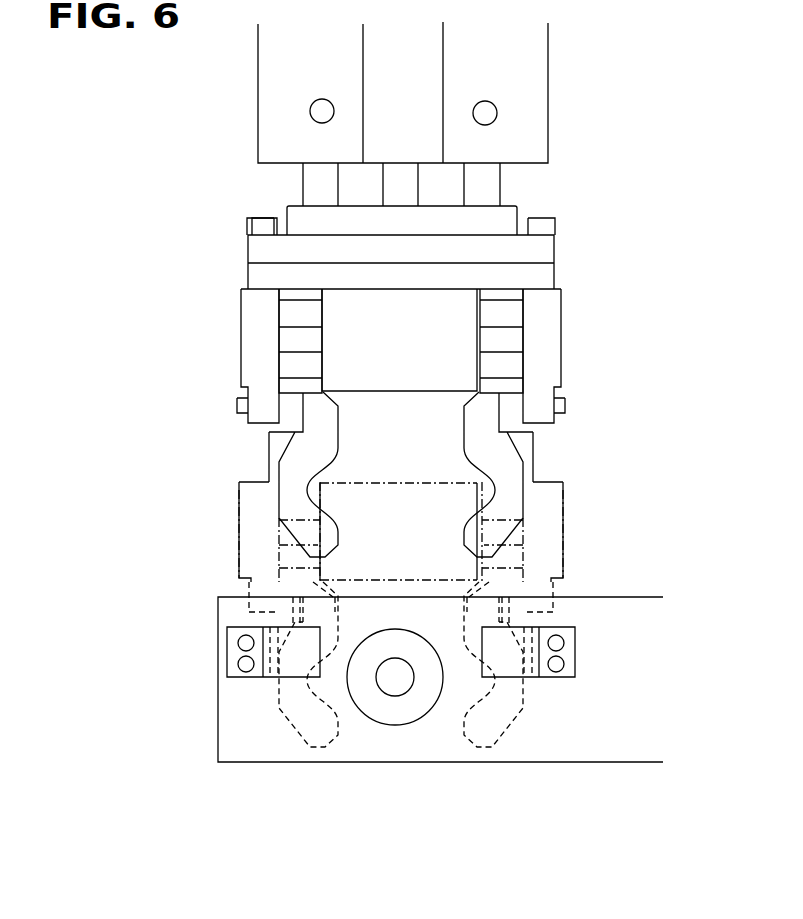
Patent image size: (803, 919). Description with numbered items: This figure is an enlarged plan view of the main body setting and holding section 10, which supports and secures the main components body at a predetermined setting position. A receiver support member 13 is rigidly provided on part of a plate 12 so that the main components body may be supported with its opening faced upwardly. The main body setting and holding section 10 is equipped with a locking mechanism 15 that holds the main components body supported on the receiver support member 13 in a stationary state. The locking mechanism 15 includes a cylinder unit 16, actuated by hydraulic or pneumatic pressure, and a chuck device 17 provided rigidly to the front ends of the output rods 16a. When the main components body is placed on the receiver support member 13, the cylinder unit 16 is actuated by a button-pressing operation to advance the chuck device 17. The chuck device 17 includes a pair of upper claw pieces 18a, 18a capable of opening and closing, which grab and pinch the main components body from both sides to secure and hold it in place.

The cylinder unit 16 is at (540, 118).
The output rods 16a is at (400, 180).
The locking mechanism 15 is at (588, 340).
The chuck device 17 is at (512, 412).
The upper claw pieces 18a is at (296, 474).
The plate 12 is at (558, 743).
The receiver support member 13 is at (400, 716).
The main body setting and holding section 10 is at (351, 738).